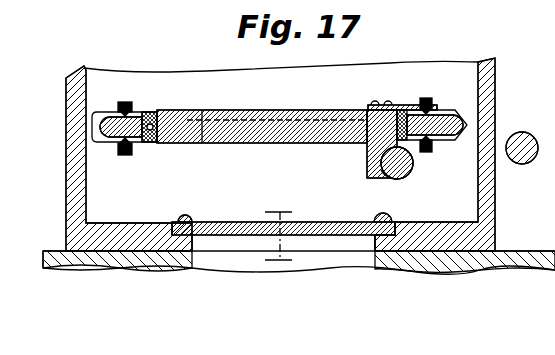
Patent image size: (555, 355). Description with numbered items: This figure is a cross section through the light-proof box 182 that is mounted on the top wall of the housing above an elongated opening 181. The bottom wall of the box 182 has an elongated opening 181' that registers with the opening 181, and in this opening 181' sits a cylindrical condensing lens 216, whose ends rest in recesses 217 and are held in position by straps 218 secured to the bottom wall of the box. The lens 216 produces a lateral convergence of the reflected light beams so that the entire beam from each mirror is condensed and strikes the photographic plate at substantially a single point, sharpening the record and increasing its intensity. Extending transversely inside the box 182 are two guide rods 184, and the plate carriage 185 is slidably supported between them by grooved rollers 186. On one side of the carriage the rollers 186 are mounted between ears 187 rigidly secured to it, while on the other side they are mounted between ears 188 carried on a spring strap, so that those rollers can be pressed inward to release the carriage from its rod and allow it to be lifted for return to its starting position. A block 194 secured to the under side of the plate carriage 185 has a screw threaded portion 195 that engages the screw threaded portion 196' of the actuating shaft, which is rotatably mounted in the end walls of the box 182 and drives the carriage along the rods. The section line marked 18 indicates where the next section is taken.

The light-proof box 182 is at (490, 86).
The guide rods 184 is at (110, 112).
The plate carriage 185 is at (198, 118).
The grooved rollers 186 is at (150, 112).
The ears 187 is at (436, 103).
The ears 188 is at (155, 112).
The block 194 is at (370, 160).
The screw threaded portion 195 is at (384, 177).
The screw threaded portion 196' is at (421, 178).
The cylindrical condensing lens 216 is at (226, 208).
The recesses 217 is at (172, 238).
The straps 218 is at (184, 215).
The elongated opening 181 is at (214, 261).
The elongated opening 181' is at (368, 260).
The section line 18- 18 is at (275, 236).